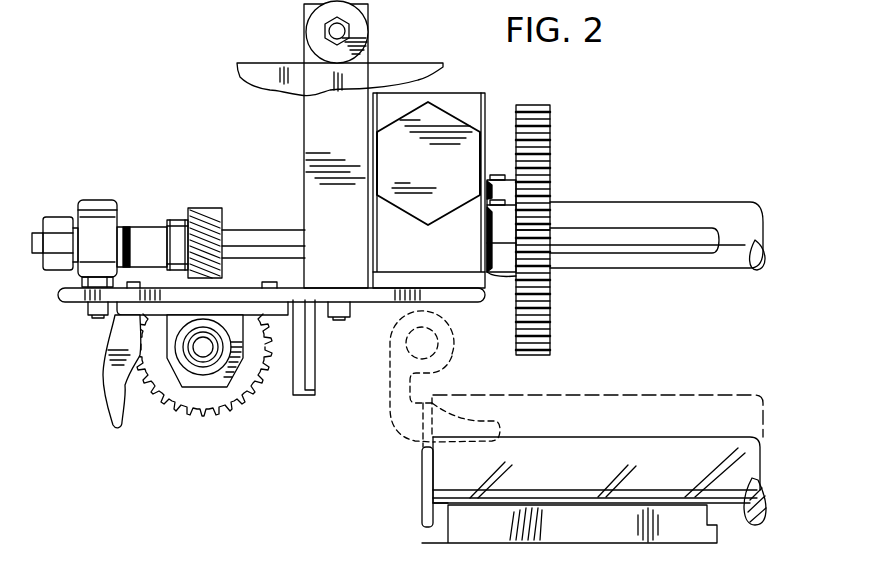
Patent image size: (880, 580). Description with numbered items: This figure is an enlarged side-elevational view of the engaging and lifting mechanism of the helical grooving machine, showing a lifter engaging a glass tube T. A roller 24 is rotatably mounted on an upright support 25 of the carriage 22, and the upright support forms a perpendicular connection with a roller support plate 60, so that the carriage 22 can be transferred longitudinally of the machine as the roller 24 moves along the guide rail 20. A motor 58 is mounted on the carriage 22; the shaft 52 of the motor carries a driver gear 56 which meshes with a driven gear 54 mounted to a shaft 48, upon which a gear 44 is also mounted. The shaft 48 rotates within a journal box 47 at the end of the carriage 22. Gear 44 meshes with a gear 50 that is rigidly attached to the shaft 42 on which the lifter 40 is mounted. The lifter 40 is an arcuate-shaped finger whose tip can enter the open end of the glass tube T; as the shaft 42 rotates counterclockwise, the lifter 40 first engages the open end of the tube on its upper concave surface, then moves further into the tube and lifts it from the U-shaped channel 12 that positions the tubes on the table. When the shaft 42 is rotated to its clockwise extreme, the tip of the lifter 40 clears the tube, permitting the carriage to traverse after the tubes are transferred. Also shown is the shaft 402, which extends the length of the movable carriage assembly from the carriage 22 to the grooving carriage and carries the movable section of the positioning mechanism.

The U-shaped channel 12 is at (498, 533).
The guide rail 20 is at (404, 70).
The carriage 22 is at (300, 117).
The roller 24 is at (313, 28).
The upright support 25 is at (318, 155).
The lifter 40 is at (110, 370).
The shaft 42 is at (203, 347).
The gear 44 is at (202, 212).
The journal box 47 is at (98, 202).
The shaft 48 is at (678, 248).
The gear 50 is at (230, 395).
The motor shaft 52 is at (507, 190).
The driven gear 54 is at (547, 333).
The driver gear 56 is at (543, 123).
The motor 58 is at (428, 205).
The roller support plate 60 is at (315, 360).
The shaft 402 is at (708, 213).
The glass tube T is at (715, 403).